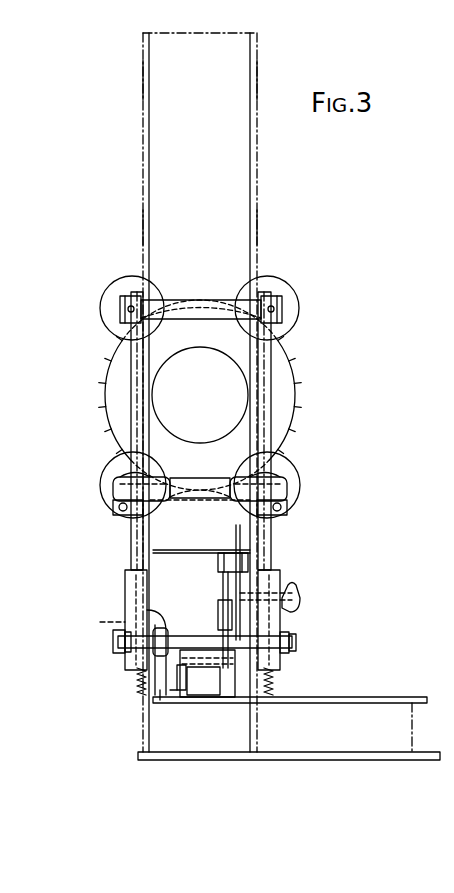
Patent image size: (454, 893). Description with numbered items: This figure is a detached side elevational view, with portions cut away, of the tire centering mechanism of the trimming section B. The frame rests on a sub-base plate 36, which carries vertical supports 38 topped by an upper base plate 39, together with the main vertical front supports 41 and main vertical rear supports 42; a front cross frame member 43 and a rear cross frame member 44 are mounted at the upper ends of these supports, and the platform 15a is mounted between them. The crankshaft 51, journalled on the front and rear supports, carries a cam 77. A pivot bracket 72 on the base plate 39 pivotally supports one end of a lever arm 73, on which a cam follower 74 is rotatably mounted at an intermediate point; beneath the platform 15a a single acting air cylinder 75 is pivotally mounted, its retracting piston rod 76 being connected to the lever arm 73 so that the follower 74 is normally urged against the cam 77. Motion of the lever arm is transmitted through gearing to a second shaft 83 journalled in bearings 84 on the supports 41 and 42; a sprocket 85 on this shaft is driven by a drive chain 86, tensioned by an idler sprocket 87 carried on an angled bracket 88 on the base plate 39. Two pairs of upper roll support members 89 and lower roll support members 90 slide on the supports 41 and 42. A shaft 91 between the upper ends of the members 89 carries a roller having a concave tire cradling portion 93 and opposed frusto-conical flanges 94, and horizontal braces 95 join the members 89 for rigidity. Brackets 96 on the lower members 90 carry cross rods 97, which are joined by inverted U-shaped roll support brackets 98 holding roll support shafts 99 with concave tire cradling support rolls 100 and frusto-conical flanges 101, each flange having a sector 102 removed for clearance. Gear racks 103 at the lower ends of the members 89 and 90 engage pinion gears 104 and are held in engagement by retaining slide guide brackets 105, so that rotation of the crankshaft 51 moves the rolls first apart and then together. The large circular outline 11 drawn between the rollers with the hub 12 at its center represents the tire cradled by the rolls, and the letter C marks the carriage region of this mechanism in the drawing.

The trimming section B is at (275, 158).
The carriage assembly C is at (293, 577).
The wheel 11 is at (113, 405).
The wheel hub 12 is at (297, 420).
The platform 15a is at (200, 553).
The sub-base plates 36 is at (138, 755).
The vertical supports 38 is at (412, 725).
The upper base plate 39 is at (355, 697).
The main vertical front supports 41 is at (257, 228).
The main vertical rear supports 42 is at (143, 233).
The front cross frame member 43 is at (257, 80).
The rear cross frame member 44 is at (143, 84).
The crankshaft 51 is at (300, 598).
The pivot bracket 72 is at (228, 697).
The lever arm 73 is at (220, 690).
The cam follower 74 is at (220, 640).
The single acting air cylinder 75 is at (236, 556).
The retracting piston rod 76 is at (222, 615).
The cam 77 is at (238, 553).
The second shaft 83 is at (113, 643).
The bearings 84 is at (127, 654).
The sprocket 85 is at (150, 612).
The drive chain 86 is at (160, 695).
The idler sprocket 87 is at (172, 698).
The angled bracket 88 is at (183, 690).
The upper roll support members 89 is at (131, 358).
The lower roll support members 90 is at (131, 388).
The shaft 91 is at (128, 298).
The concave tire cradling portion 93 is at (120, 308).
The frusto-conical flanges 94 is at (132, 276).
The horizontal braces 95 is at (216, 318).
The brackets 96 is at (113, 506).
The cross rods 97 is at (123, 511).
The roll support brackets 98 is at (183, 478).
The roll support shafts 99 is at (113, 489).
The concave tire cradling support rolls 100 is at (125, 462).
The frusto-conical flanges 101 is at (118, 478).
The sector 102 is at (230, 500).
The gear racks 103 is at (137, 688).
The pinion gears 104 is at (125, 622).
The retaining slide guide brackets 105 is at (125, 574).